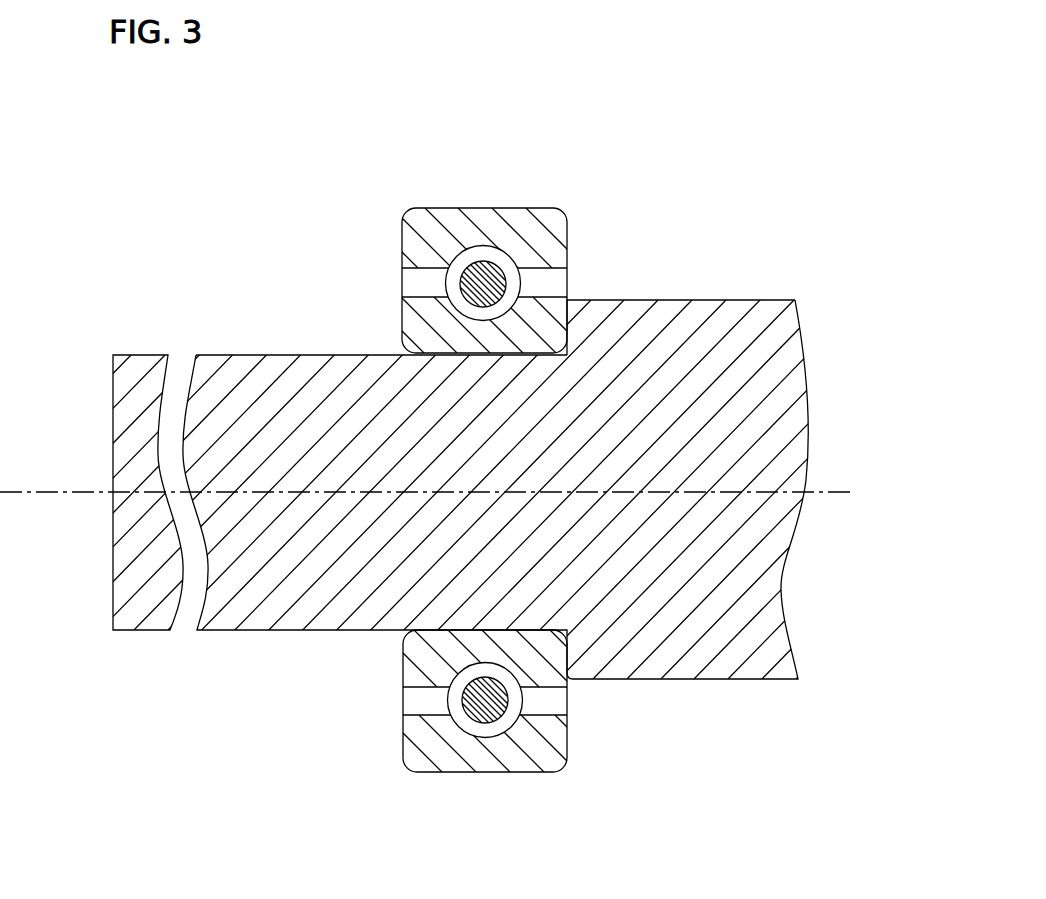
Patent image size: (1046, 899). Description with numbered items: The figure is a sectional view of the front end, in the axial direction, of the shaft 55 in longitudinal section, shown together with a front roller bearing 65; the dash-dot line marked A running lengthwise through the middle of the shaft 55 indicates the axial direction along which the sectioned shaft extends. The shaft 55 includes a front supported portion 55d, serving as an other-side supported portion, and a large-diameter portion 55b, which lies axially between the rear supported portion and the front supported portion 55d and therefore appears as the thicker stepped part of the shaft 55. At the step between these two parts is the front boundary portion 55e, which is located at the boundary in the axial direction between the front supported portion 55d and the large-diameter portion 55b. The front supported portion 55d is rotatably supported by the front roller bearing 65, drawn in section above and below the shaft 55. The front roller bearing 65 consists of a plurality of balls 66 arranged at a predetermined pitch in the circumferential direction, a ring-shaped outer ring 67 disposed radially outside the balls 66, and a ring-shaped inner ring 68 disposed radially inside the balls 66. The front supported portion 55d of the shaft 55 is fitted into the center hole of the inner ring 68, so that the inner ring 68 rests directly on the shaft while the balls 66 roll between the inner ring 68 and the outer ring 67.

The shaft 55 is at (807, 279).
The large-diameter portion 55b is at (637, 300).
The front supported portion 55d is at (218, 354).
The front boundary portion 55e is at (553, 350).
The front roller bearing 65 is at (554, 203).
The balls 66 is at (507, 281).
The outer ring 67 is at (480, 207).
The inner ring 68 is at (405, 330).
The axis A is at (80, 492).